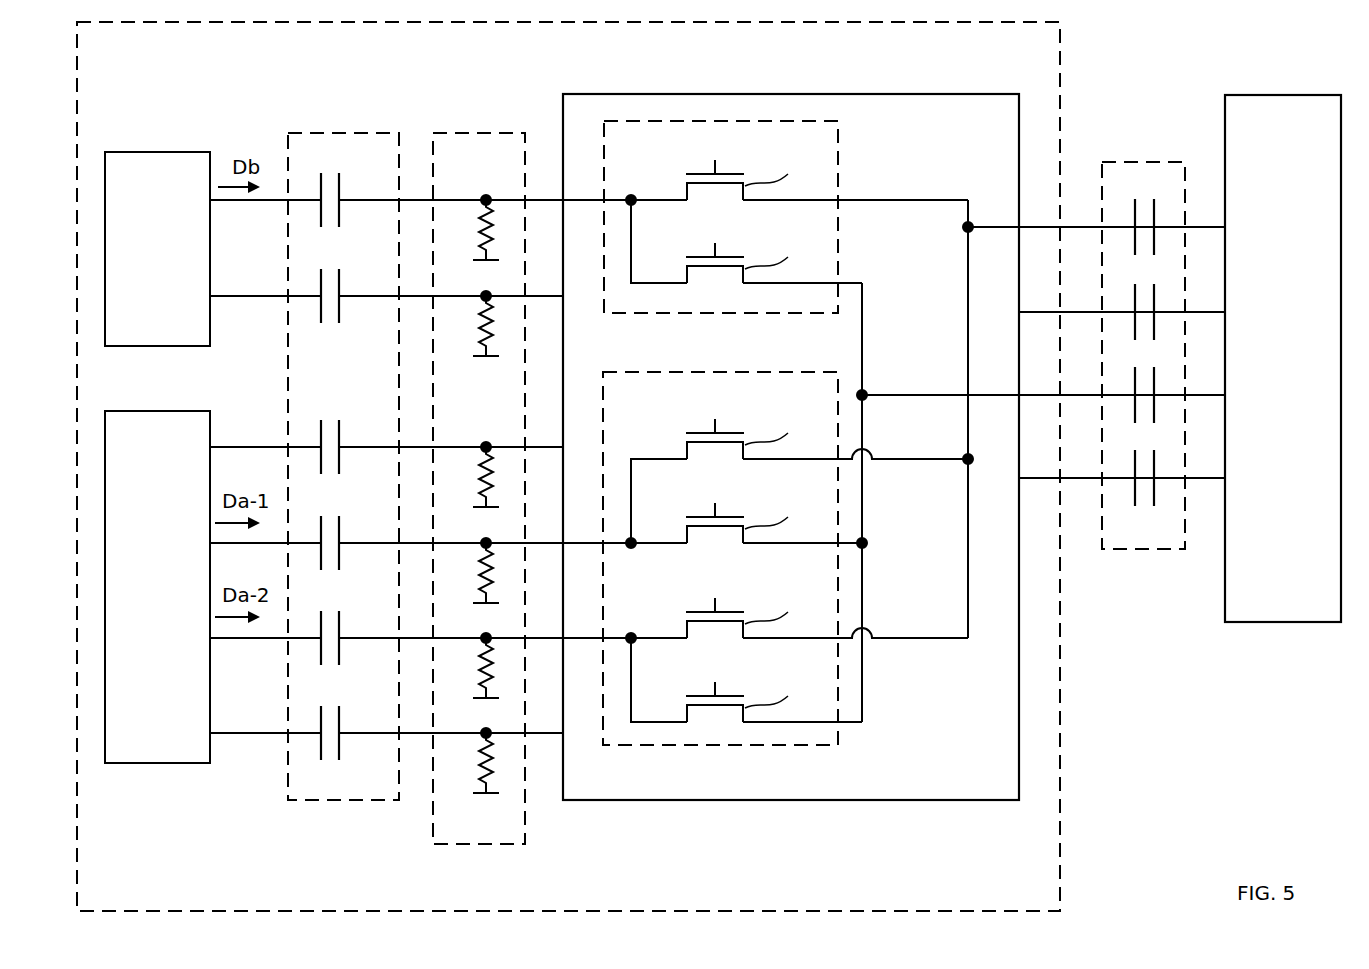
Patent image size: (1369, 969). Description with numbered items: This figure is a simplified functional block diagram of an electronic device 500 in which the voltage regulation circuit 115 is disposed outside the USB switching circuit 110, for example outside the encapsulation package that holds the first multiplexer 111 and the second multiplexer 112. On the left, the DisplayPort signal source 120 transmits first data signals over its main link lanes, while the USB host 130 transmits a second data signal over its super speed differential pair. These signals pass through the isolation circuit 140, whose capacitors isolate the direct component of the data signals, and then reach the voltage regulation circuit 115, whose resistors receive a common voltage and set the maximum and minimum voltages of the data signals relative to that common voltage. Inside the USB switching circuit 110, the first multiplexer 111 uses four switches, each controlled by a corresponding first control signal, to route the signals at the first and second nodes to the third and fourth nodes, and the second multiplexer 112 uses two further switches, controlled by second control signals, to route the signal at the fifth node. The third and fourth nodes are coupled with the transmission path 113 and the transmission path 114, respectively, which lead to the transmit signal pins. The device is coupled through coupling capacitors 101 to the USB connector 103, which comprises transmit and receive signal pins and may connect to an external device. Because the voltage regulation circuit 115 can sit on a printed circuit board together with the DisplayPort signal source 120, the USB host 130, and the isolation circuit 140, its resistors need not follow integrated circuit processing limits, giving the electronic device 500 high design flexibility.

The electronic device 500 is at (157, 66).
The USB host 130 is at (158, 152).
The DisplayPort signal source 120 is at (165, 411).
The isolation circuit 140 is at (338, 133).
The voltage regulation circuit 115 is at (478, 133).
The USB switching circuit 110 is at (715, 94).
The second multiplexer 112 is at (838, 140).
The first multiplexer 111 is at (838, 745).
The transmission path 114 is at (878, 352).
The transmission path 113 is at (955, 512).
The coupling capacitors 101 is at (1137, 162).
The USB connector 103 is at (1280, 95).